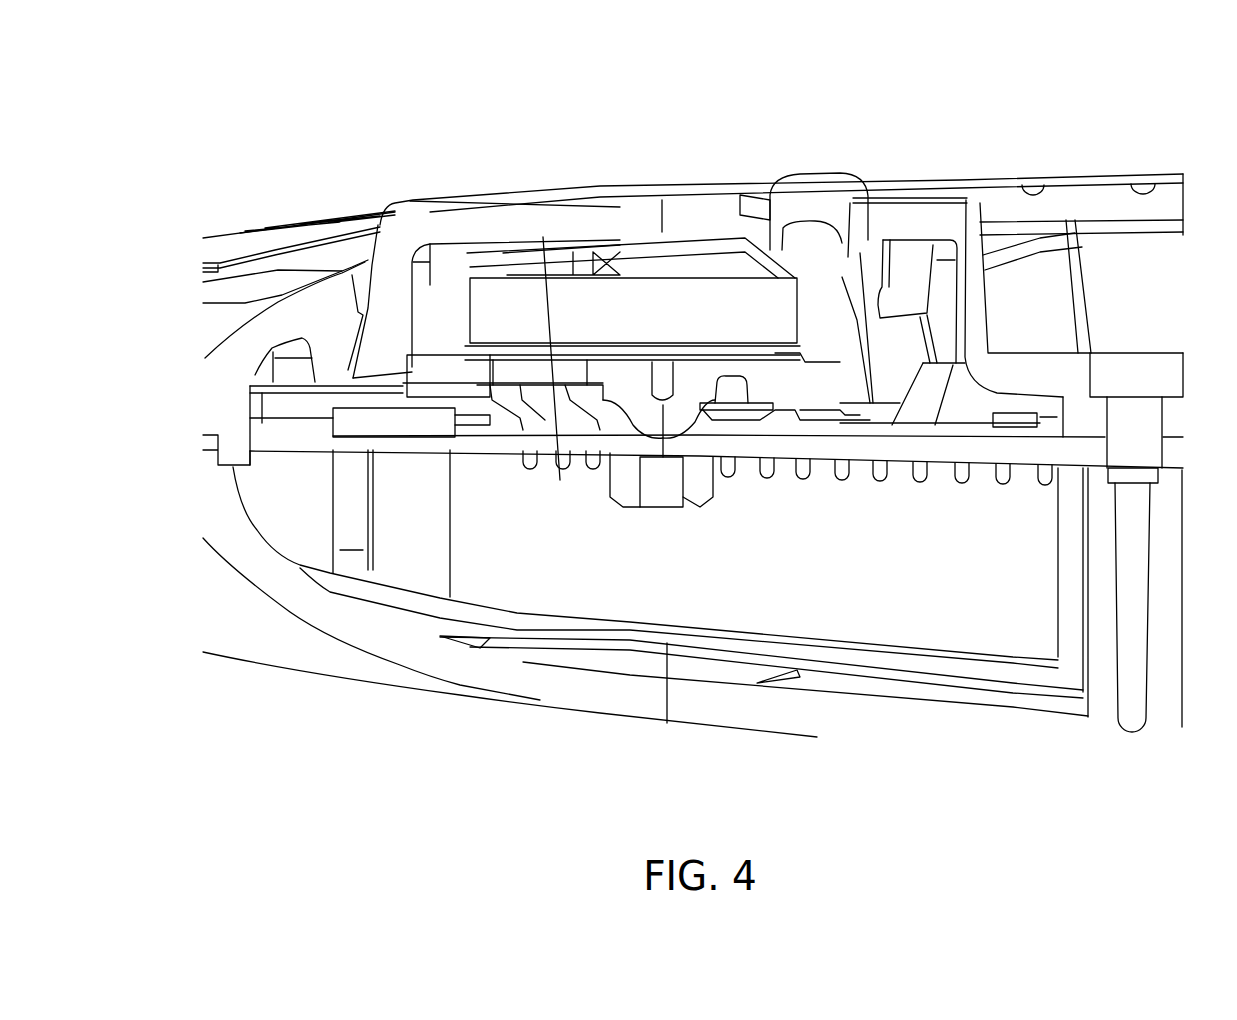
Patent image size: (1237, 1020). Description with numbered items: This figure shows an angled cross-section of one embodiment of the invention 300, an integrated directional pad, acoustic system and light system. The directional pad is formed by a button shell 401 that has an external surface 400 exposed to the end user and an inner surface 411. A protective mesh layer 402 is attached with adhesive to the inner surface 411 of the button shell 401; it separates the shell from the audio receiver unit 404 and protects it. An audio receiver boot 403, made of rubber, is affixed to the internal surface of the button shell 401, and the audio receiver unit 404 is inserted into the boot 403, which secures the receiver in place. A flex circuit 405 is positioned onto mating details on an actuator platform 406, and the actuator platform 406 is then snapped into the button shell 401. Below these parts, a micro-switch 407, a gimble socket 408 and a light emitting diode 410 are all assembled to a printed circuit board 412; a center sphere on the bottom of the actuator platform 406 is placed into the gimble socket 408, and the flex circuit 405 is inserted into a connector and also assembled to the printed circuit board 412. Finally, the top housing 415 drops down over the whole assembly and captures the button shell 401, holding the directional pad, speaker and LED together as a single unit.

The integrated directional pad, acoustic system and light system 300 is at (362, 100).
The external surface 400 is at (600, 193).
The button shell 401 is at (630, 220).
The protective mesh layer 402 is at (693, 240).
The audio receiver boot 403 is at (788, 252).
The audio receiver unit 404 is at (783, 310).
The flex circuit 405 is at (776, 355).
The actuator platform 406 is at (760, 392).
The micro-switch 407 is at (792, 423).
The gimble socket 408 is at (693, 473).
The light emitting diode 410 is at (377, 450).
The inner surface 411 is at (595, 452).
The printed circuit board 412 is at (1025, 450).
The top housing 415 is at (282, 322).